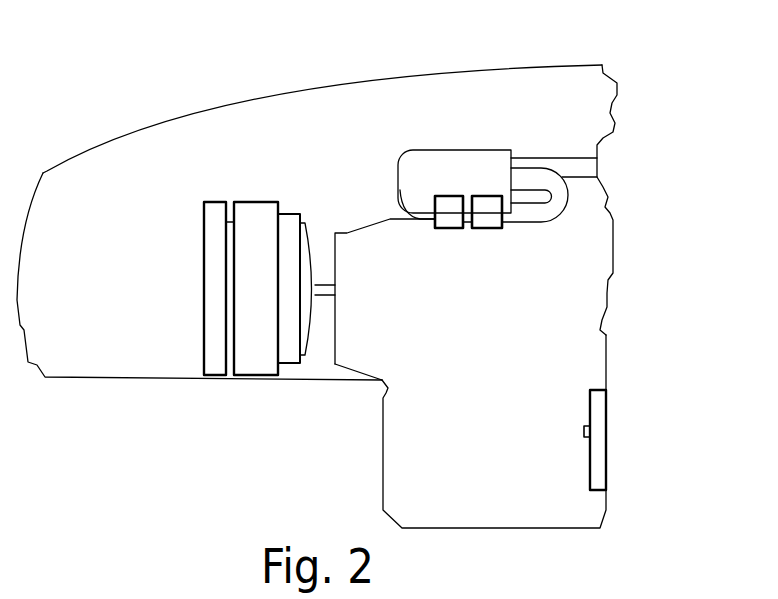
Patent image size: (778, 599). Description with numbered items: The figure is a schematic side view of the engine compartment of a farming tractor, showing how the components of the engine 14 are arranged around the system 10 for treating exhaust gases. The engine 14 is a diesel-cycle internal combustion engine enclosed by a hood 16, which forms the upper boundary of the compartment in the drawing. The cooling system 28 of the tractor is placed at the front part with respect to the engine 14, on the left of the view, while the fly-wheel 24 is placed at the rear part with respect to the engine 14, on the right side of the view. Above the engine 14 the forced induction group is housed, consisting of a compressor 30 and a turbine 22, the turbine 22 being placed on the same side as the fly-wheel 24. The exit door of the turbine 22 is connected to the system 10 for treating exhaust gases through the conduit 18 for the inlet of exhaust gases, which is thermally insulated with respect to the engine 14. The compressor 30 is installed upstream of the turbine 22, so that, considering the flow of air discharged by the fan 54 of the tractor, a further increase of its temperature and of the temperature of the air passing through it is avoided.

The system for treating exhaust gases 10 is at (467, 158).
The internal combustion engine 14 is at (523, 365).
The hood 16 is at (366, 78).
The conduit for the inlet of exhaust gases 18 is at (557, 219).
The turbine 22 is at (485, 220).
The fly-wheel 24 is at (597, 440).
The cooling system 28 is at (254, 214).
The compressor 30 is at (448, 217).
The fan 54 is at (316, 340).